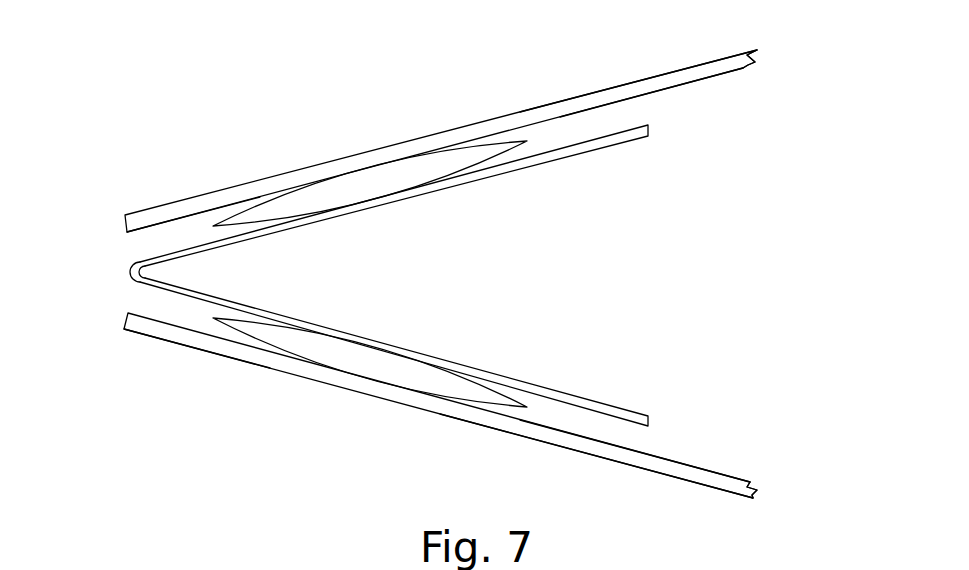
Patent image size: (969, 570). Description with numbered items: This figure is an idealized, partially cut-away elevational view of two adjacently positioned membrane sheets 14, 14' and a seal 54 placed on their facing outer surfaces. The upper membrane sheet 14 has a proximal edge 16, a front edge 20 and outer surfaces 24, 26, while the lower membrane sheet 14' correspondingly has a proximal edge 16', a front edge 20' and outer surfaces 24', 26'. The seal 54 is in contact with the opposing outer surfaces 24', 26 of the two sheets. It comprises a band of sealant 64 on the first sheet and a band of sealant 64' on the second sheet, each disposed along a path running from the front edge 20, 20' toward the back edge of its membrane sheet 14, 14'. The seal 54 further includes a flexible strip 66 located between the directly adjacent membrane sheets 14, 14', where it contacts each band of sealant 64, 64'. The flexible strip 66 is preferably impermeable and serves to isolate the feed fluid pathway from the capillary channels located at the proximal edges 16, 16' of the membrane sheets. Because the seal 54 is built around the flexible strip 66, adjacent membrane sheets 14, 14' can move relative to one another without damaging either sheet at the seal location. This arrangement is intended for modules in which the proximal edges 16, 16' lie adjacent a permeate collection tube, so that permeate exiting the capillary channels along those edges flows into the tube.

The membrane sheet 14 is at (780, 45).
The proximal edge 16 is at (429, 127).
The front edge 20 is at (221, 178).
The outer surface 24 is at (638, 77).
The outer surface 26 is at (674, 95).
The band of sealant 64 is at (370, 165).
The flexible strip 66 is at (600, 143).
The seal 54 is at (129, 271).
The proximal edge 16' is at (437, 396).
The front edge 20' is at (197, 365).
The band of sealant 64' is at (370, 373).
The outer surface 26' is at (596, 456).
The outer surface 24' is at (635, 451).
The membrane sheet 14' is at (791, 479).